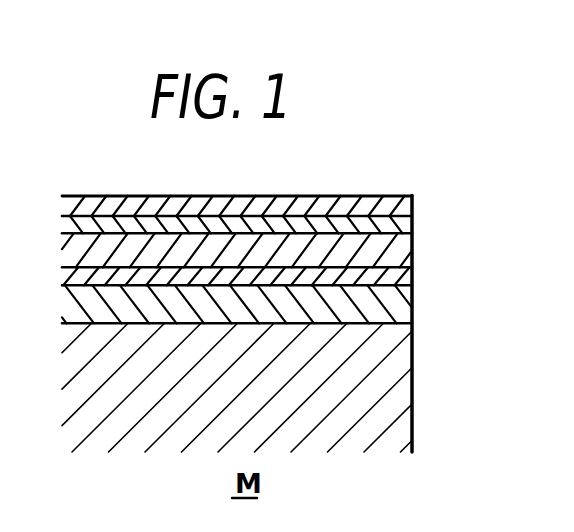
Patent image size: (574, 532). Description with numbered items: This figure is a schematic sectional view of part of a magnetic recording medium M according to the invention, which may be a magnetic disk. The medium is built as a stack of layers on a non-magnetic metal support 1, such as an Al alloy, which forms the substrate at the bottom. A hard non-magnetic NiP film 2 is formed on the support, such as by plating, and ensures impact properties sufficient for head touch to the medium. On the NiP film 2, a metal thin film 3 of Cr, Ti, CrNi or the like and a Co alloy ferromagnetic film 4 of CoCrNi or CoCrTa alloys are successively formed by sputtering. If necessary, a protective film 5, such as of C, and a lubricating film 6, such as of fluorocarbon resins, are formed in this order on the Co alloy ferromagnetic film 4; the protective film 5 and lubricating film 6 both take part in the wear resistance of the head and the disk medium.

The non-magnetic metal support 1 is at (387, 382).
The hard non-magnetic NiP film 2 is at (403, 305).
The metal thin film 3 is at (405, 278).
The Co alloy ferromagnetic film 4 is at (405, 250).
The protective film 5 is at (400, 227).
The lubricating film 6 is at (408, 205).